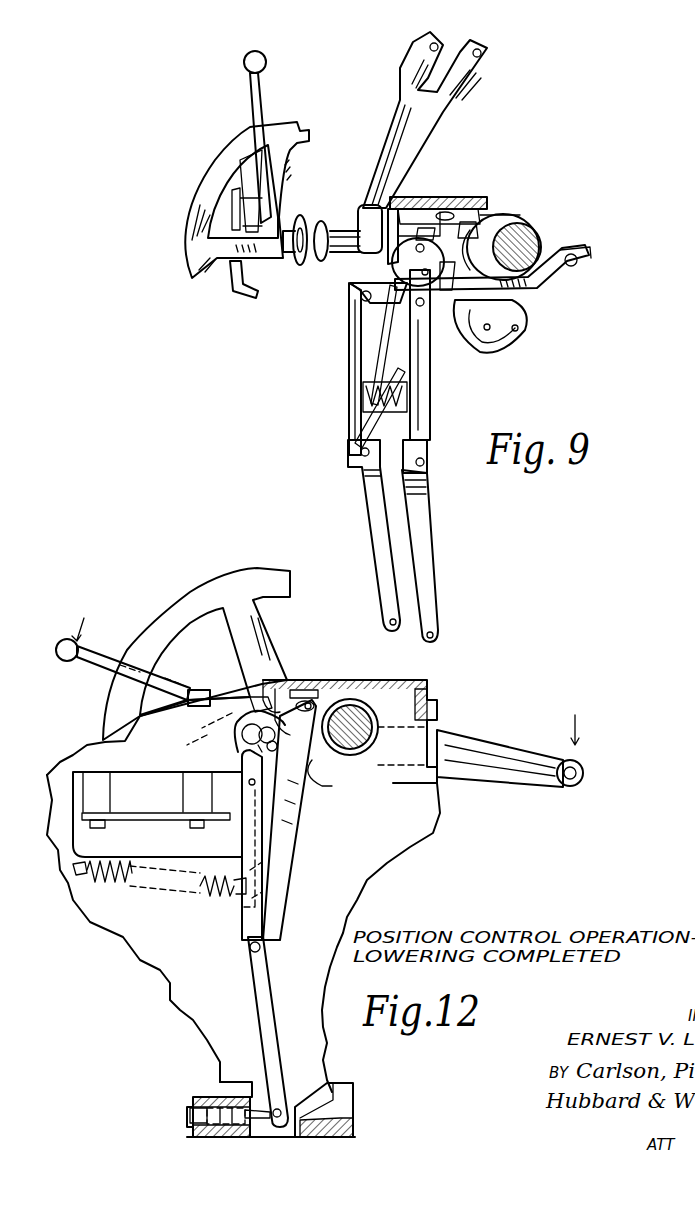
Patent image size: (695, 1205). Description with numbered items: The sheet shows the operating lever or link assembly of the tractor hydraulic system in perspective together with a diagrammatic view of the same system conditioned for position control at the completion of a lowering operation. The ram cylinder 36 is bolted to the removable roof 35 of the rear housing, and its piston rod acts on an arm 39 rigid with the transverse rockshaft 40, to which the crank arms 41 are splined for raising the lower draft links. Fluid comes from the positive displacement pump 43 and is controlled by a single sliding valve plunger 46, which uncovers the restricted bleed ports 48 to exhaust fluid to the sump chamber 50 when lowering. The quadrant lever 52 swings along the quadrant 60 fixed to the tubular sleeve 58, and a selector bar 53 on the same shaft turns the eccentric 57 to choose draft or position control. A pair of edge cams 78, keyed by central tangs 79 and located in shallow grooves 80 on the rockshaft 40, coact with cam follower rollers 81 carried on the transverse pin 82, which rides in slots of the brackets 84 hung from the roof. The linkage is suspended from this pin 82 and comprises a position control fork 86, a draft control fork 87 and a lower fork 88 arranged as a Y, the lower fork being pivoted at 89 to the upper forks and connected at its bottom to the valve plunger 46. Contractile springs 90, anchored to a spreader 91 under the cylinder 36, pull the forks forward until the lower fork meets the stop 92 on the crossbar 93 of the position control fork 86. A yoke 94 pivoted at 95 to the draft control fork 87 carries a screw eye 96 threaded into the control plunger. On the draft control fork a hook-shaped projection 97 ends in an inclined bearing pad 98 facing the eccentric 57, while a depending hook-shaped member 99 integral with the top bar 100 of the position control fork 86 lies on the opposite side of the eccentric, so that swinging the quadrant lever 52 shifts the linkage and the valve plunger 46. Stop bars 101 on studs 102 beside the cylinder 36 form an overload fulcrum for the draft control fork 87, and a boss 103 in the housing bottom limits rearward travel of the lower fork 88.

In FIG. 12, the removable roof 35 is at (92, 747).
In FIG. 12, the cylinder 36 is at (77, 793).
In FIG. 9, the arm 39 is at (522, 320).
In FIG. 12, the arm 39 is at (313, 772).
In FIG. 9, the rockshaft 40 is at (530, 230).
In FIG. 12, the rockshaft 40 is at (353, 745).
In FIG. 9, the crank arms 41 is at (398, 130).
In FIG. 12, the crank arms 41 is at (497, 748).
In FIG. 12, the positive displacement pump 43 is at (227, 1080).
In FIG. 12, the valve plunger 46 is at (256, 1108).
In FIG. 12, the bleed ports 48 is at (233, 1103).
In FIG. 12, the sump chamber 50 is at (298, 1100).
In FIG. 9, the quadrant lever 52 is at (262, 82).
In FIG. 12, the quadrant lever 52 is at (66, 638).
In FIG. 9, the selector bar 53 is at (229, 273).
In FIG. 9, the eccentric 57 is at (428, 240).
In FIG. 12, the eccentric 57 is at (267, 748).
In FIG. 9, the tubular sleeve 58 is at (362, 226).
In FIG. 9, the quadrant 60 is at (215, 175).
In FIG. 12, the quadrant 60 is at (178, 608).
In FIG. 9, the edge cams 78 is at (500, 223).
In FIG. 12, the edge cams 78 is at (341, 697).
In FIG. 12, the central tangs 79 is at (354, 712).
In FIG. 12, the shallow grooves 80 is at (373, 744).
In FIG. 9, the cam follower rollers 81 is at (410, 195).
In FIG. 12, the cam follower rollers 81 is at (306, 681).
In FIG. 9, the transverse pin 82 is at (452, 208).
In FIG. 12, the transverse pin 82 is at (312, 703).
In FIG. 9, the brackets 84 is at (432, 195).
In FIG. 12, the brackets 84 is at (282, 690).
In FIG. 9, the position control fork 86 is at (383, 361).
In FIG. 12, the position control fork 86 is at (288, 843).
In FIG. 9, the draft control fork 87 is at (349, 342).
In FIG. 12, the draft control fork 87 is at (243, 839).
In FIG. 9, the lower fork 88 is at (420, 554).
In FIG. 12, the lower fork 88 is at (258, 992).
In FIG. 9, the pivots 89 is at (426, 468).
In FIG. 12, the pivots 89 is at (249, 948).
In FIG. 12, the contractile springs 90 is at (130, 888).
In FIG. 12, the spreader 91 is at (70, 882).
In FIG. 9, the stop 92 is at (368, 403).
In FIG. 12, the stop 92 is at (233, 892).
In FIG. 9, the crossbar 93 is at (374, 383).
In FIG. 9, the yoke 94 is at (540, 284).
In FIG. 9, the pivots 95 is at (355, 298).
In FIG. 9, the screw eye 96 is at (565, 251).
In FIG. 9, the hook-shaped projection 97 is at (366, 246).
In FIG. 12, the hook-shaped projection 97 is at (242, 730).
In FIG. 12, the bearing pad 98 is at (250, 694).
In FIG. 9, the hook-shaped member 99 is at (433, 250).
In FIG. 12, the hook-shaped member 99 is at (263, 697).
In FIG. 9, the top bar 100 is at (414, 208).
In FIG. 12, the stop bars 101 is at (173, 821).
In FIG. 12, the studs 102 is at (190, 789).
In FIG. 12, the boss 103 is at (322, 1085).